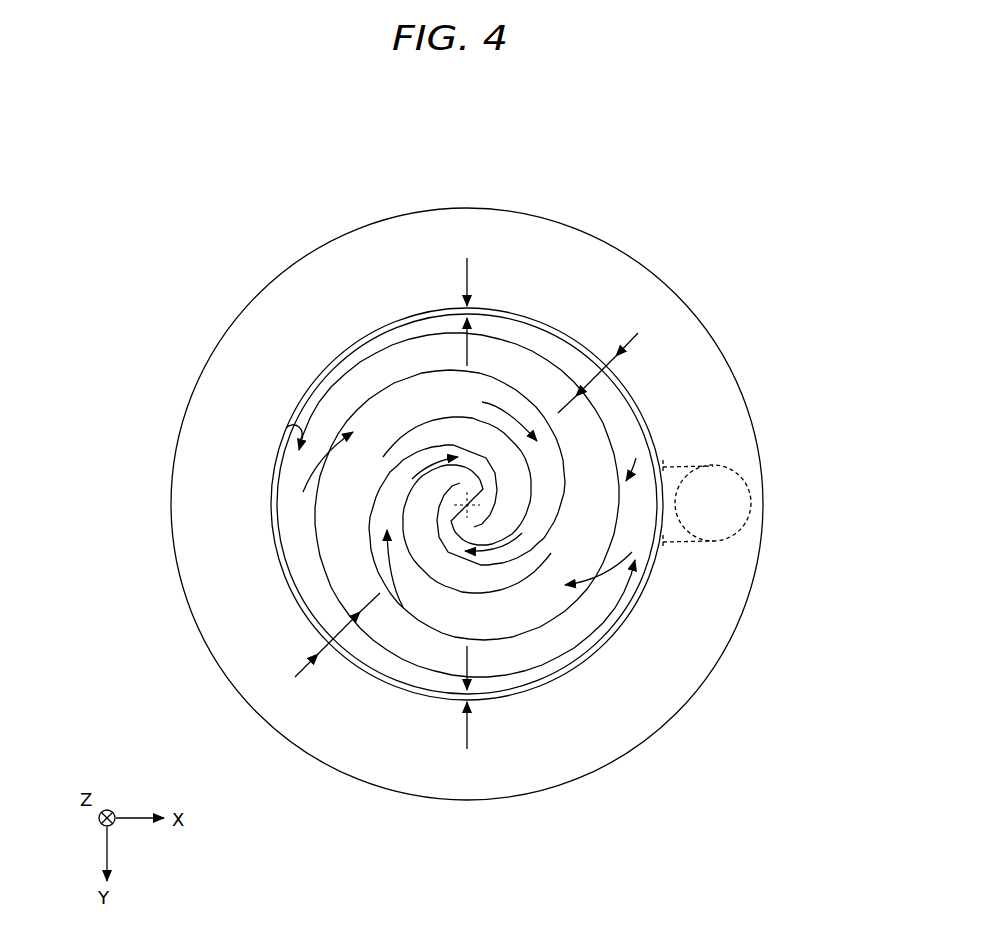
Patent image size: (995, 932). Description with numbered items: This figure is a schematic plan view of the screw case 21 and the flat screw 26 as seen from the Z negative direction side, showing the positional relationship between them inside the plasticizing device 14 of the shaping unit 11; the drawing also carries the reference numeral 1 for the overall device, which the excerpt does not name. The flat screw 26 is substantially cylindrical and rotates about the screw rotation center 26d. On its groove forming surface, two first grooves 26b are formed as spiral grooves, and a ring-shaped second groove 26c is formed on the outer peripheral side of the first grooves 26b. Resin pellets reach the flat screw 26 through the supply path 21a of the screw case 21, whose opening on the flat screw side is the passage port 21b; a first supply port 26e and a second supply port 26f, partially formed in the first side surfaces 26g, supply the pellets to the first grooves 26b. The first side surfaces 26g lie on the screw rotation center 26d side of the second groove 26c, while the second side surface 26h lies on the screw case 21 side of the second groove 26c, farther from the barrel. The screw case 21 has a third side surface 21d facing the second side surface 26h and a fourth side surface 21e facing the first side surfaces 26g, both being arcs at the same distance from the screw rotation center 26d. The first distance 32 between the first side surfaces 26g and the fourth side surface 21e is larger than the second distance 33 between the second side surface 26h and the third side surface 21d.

The plasticizing device 14 is at (504, 441).
The shaping unit 11 is at (504, 441).
The device 1 is at (504, 441).
The screw case 21 is at (753, 433).
The supply path 21a is at (752, 505).
The passage port 21b is at (667, 541).
The third side surface 21d is at (169, 422).
The fourth side surface 21e is at (290, 434).
The flat screw 26 is at (338, 580).
The first grooves 26b is at (415, 390).
The second groove 26c is at (545, 340).
The screw rotation center 26d is at (587, 441).
The first supply port 26e is at (482, 492).
The second supply port 26f is at (306, 468).
The first side surfaces 26g is at (345, 370).
The second side surface 26h is at (587, 353).
The first distance 32 is at (343, 633).
The second distance 33 is at (472, 304).